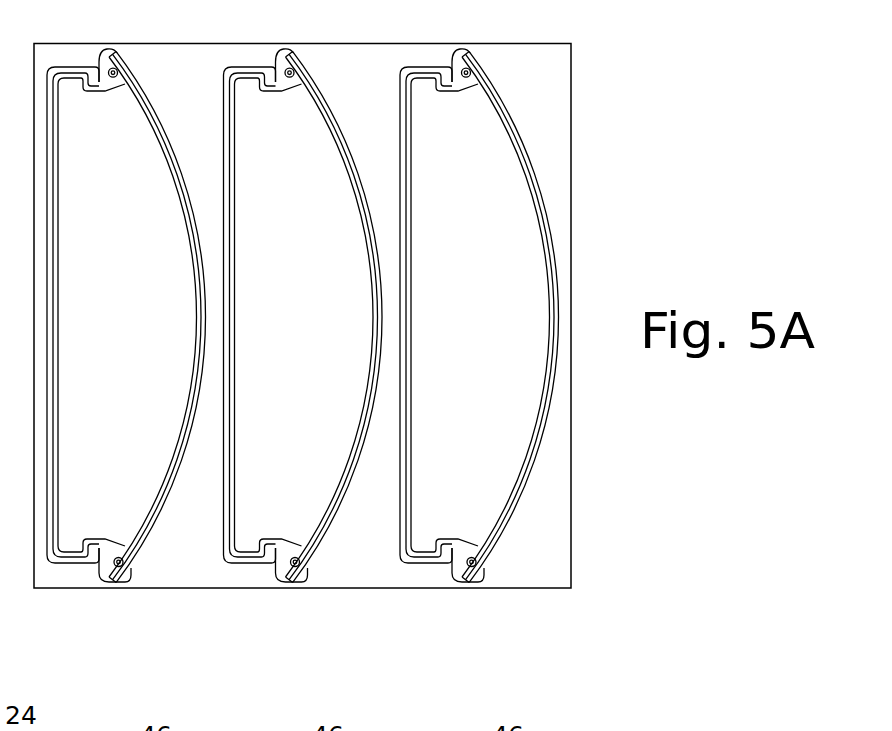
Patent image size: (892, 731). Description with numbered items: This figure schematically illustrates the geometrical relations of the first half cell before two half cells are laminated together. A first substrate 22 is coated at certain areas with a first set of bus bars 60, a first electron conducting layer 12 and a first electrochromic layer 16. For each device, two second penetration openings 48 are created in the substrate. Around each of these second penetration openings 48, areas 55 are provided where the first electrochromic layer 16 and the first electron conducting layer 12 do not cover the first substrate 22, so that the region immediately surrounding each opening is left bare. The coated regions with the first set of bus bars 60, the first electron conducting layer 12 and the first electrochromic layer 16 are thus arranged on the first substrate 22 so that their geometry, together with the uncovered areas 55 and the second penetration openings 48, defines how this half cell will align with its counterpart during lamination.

The first electron conducting layer 12 is at (381, 317).
The first electrochromic layer 16 is at (98, 506).
The first substrate 22 is at (558, 588).
The second penetration openings 48 is at (63, 66).
The areas 55 is at (53, 60).
The first set of bus bars 60 is at (104, 106).